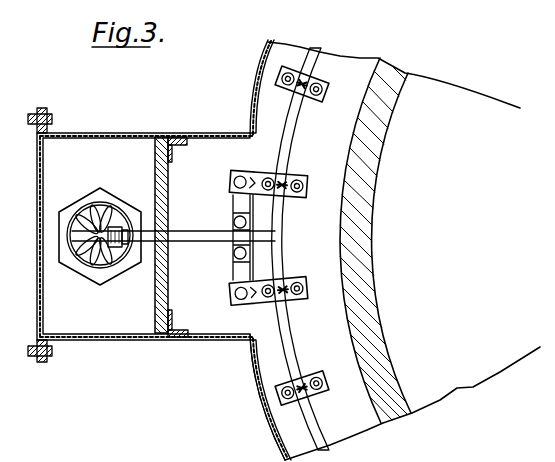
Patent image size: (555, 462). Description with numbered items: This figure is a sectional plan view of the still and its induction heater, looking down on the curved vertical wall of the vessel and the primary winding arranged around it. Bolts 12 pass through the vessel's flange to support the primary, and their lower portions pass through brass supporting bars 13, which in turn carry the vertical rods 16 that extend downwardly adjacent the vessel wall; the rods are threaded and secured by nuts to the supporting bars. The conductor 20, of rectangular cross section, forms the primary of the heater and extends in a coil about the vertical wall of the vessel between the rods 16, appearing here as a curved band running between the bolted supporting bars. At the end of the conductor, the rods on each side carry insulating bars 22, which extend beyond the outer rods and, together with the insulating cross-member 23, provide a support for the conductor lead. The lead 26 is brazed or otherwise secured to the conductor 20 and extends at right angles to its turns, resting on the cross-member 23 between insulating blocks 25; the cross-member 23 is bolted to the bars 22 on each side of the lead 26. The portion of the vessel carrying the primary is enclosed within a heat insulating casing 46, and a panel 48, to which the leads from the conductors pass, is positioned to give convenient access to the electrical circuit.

The bolts 12 is at (302, 378).
The brass supporting bars 13 is at (327, 87).
The vertical rods 16 is at (313, 395).
The conductor 20 is at (295, 128).
The insulating bars 22 is at (250, 173).
The insulating cross-member 23 is at (233, 193).
The insulating blocks 25 is at (233, 217).
The lead 26 is at (217, 235).
The heat insulating casing 46 is at (270, 428).
The panel 48 is at (155, 173).